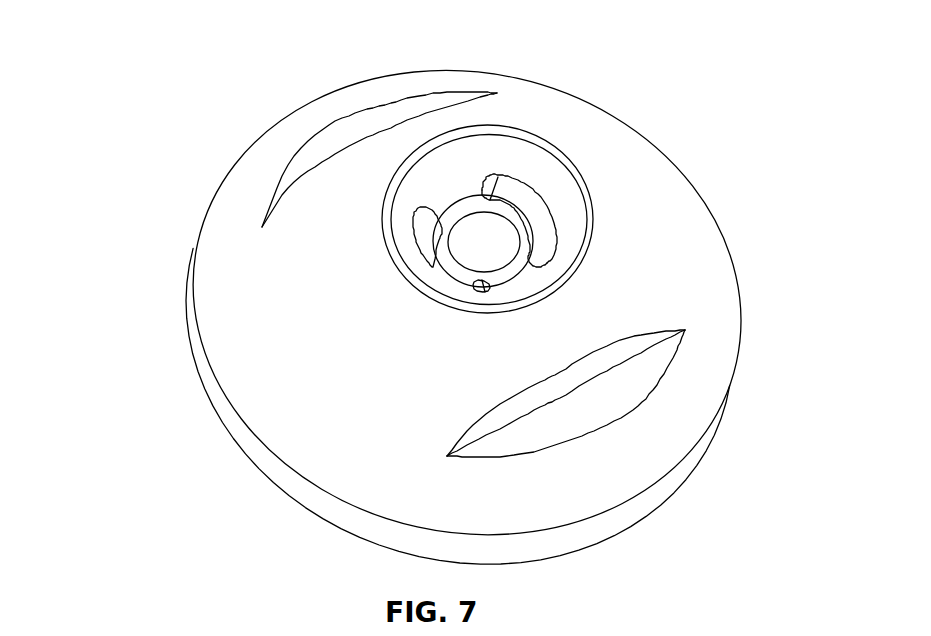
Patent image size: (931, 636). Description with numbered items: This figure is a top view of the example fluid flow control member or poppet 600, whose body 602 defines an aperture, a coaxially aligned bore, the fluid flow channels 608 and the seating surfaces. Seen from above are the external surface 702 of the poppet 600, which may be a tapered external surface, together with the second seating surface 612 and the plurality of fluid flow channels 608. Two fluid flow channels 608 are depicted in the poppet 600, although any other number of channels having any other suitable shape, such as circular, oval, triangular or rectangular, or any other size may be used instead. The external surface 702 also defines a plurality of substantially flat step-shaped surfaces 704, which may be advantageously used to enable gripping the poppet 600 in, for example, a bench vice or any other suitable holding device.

The poppet 600 is at (135, 63).
The body 602 is at (246, 441).
The fluid flow channels 608 is at (530, 208).
The second seating surface 612 is at (558, 203).
The external surface 702 is at (703, 258).
The substantially flat step-shaped surfaces 704 is at (412, 104).